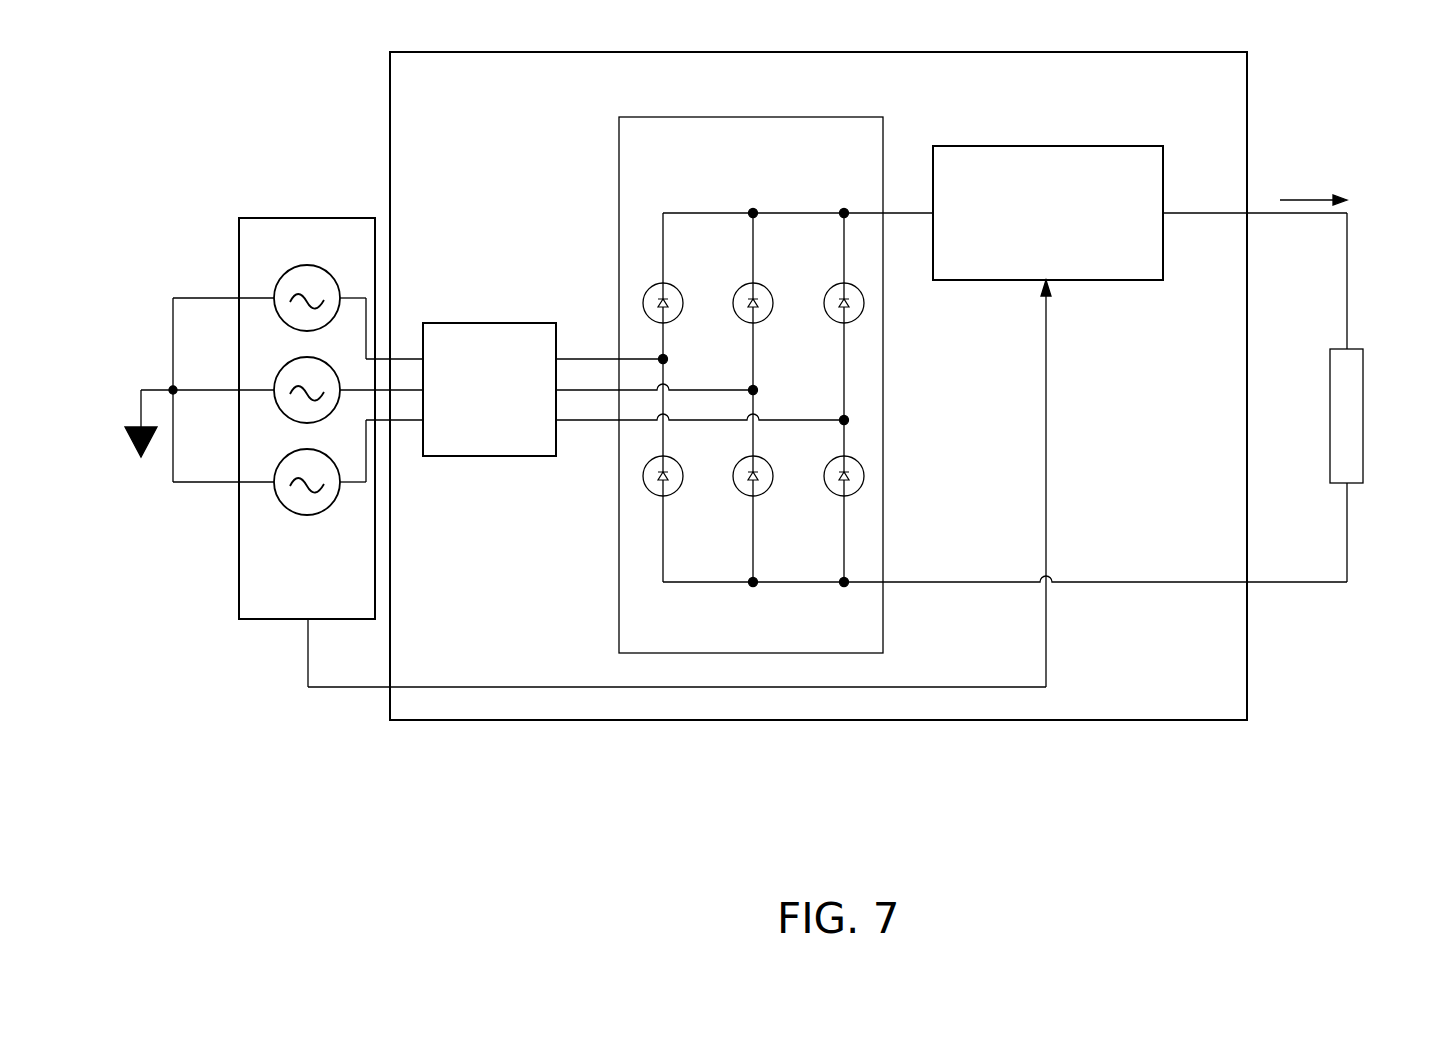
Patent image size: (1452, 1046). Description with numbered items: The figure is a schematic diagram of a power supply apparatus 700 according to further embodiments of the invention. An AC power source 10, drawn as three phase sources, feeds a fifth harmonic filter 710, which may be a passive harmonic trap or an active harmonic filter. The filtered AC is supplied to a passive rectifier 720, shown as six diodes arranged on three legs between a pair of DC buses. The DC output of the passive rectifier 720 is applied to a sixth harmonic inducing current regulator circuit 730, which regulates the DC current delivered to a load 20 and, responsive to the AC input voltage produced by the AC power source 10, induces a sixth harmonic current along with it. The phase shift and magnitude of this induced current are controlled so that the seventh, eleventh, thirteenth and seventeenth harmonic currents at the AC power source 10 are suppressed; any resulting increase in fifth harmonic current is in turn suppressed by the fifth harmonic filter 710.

The power supply apparatus 700 is at (818, 720).
The AC power source 10 is at (307, 217).
The fifth harmonic filter 710 is at (491, 321).
The passive rectifier 720 is at (753, 117).
The sixth harmonic inducing current regulator circuit 730 is at (1047, 146).
The load 20 is at (1363, 417).